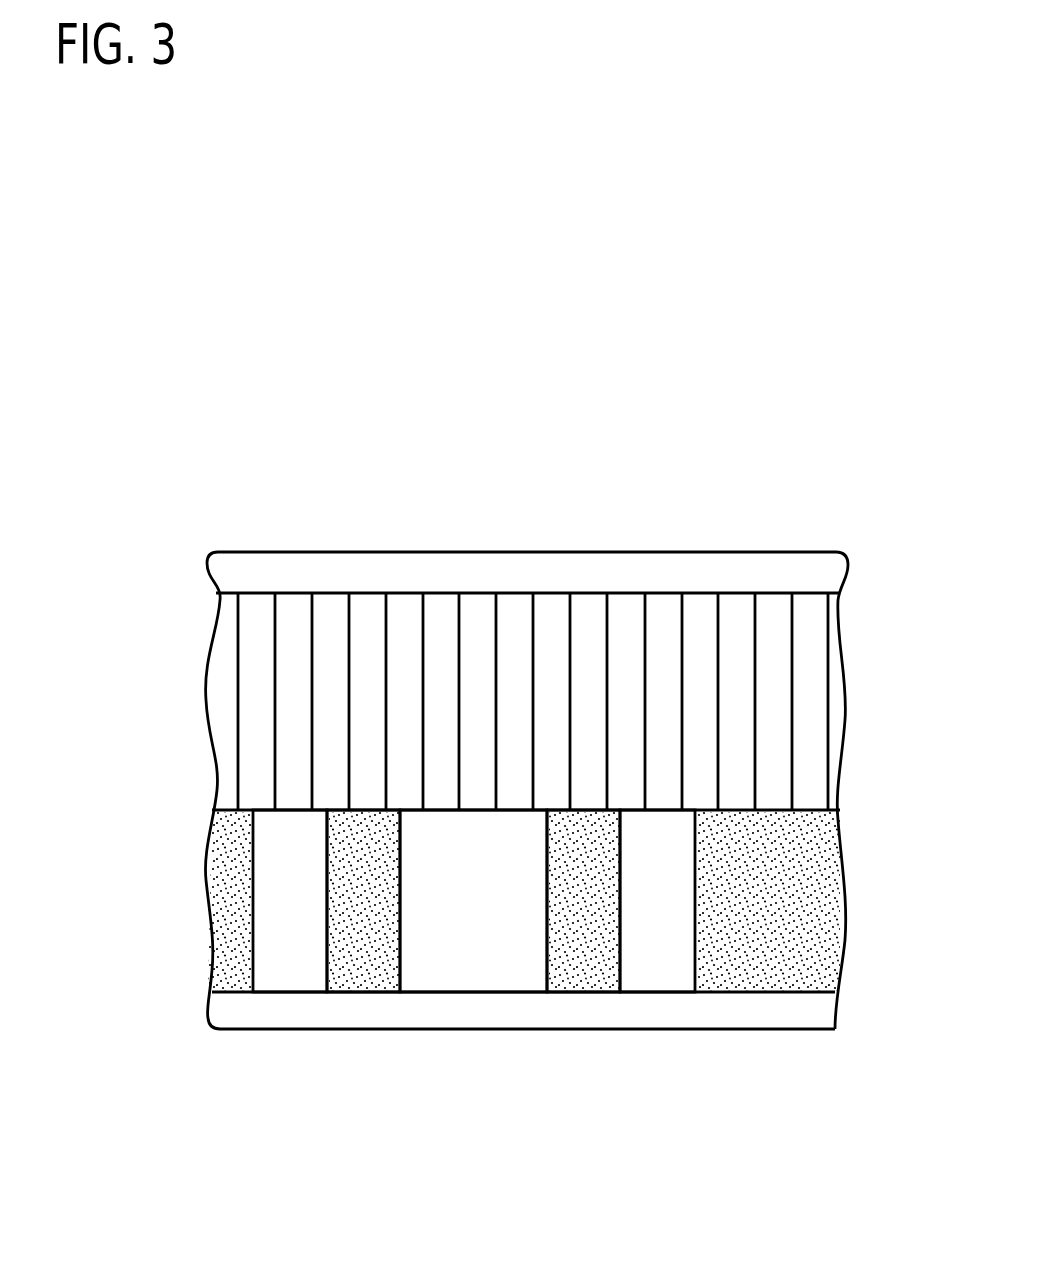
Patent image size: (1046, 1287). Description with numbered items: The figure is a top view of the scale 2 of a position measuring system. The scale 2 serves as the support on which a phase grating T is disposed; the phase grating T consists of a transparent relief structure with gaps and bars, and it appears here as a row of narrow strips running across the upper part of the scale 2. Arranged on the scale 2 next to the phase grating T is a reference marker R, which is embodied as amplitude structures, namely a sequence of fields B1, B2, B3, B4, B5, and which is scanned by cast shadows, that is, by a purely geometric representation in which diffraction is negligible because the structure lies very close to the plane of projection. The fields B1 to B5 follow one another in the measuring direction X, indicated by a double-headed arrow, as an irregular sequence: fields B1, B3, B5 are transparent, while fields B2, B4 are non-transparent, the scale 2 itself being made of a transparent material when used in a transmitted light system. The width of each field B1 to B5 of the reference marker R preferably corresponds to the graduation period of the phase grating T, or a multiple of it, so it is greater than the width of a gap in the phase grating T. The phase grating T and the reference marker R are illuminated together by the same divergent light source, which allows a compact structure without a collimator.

The scale 2 is at (835, 583).
The phase grating T is at (817, 723).
The transparent field B1 is at (290, 901).
The non-transparent field B2 is at (363, 901).
The transparent field B3 is at (473, 901).
The non-transparent field B4 is at (583, 901).
The transparent field B5 is at (657, 901).
The reference marker R is at (692, 1012).
The measuring direction X is at (425, 505).